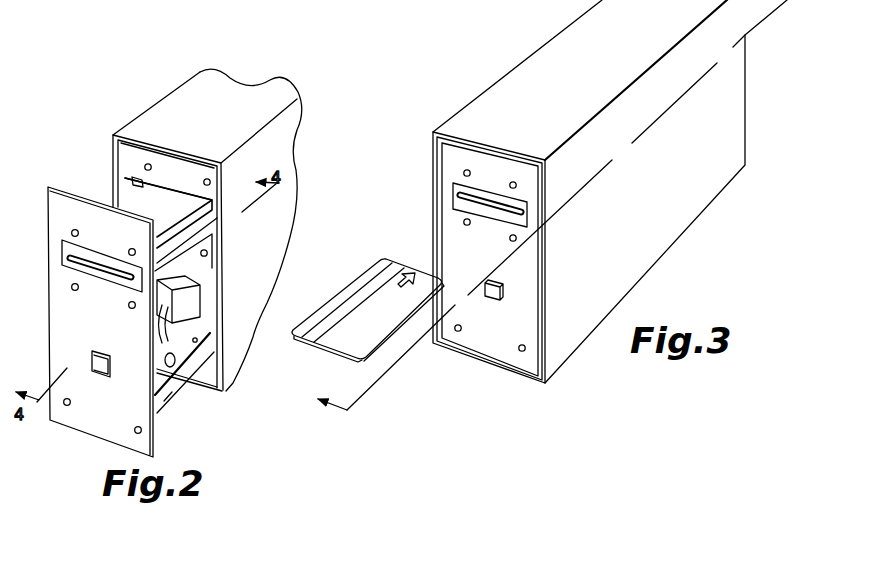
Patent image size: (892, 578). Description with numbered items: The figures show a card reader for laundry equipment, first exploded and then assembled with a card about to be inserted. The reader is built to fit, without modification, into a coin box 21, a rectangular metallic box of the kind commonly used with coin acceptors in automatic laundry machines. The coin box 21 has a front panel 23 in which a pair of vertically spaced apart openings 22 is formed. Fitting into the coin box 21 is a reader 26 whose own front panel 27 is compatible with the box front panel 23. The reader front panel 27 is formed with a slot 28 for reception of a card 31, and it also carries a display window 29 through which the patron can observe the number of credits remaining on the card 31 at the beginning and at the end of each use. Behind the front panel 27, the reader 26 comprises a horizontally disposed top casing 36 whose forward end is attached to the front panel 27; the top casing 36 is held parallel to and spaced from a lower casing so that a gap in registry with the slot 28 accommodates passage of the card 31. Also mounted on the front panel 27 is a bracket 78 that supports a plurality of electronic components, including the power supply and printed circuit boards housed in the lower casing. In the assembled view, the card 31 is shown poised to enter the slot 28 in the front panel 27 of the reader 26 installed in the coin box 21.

In FIG. 2, the coin box 21 is at (165, 95).
In FIG. 3, the coin box 21 is at (534, 48).
In FIG. 2, the openings 22 is at (133, 182).
In FIG. 2, the front panel 23 is at (132, 155).
In FIG. 2, the reader 26 is at (174, 411).
In FIG. 2, the front panel 27 is at (117, 420).
In FIG. 3, the front panel 27 is at (458, 240).
In FIG. 2, the slot 28 is at (107, 272).
In FIG. 3, the slot 28 is at (470, 197).
In FIG. 2, the display window 29 is at (98, 362).
In FIG. 3, the display window 29 is at (501, 298).
In FIG. 3, the card 31 is at (340, 307).
In FIG. 2, the top casing 36 is at (172, 211).
In FIG. 2, the bracket 78 is at (184, 381).